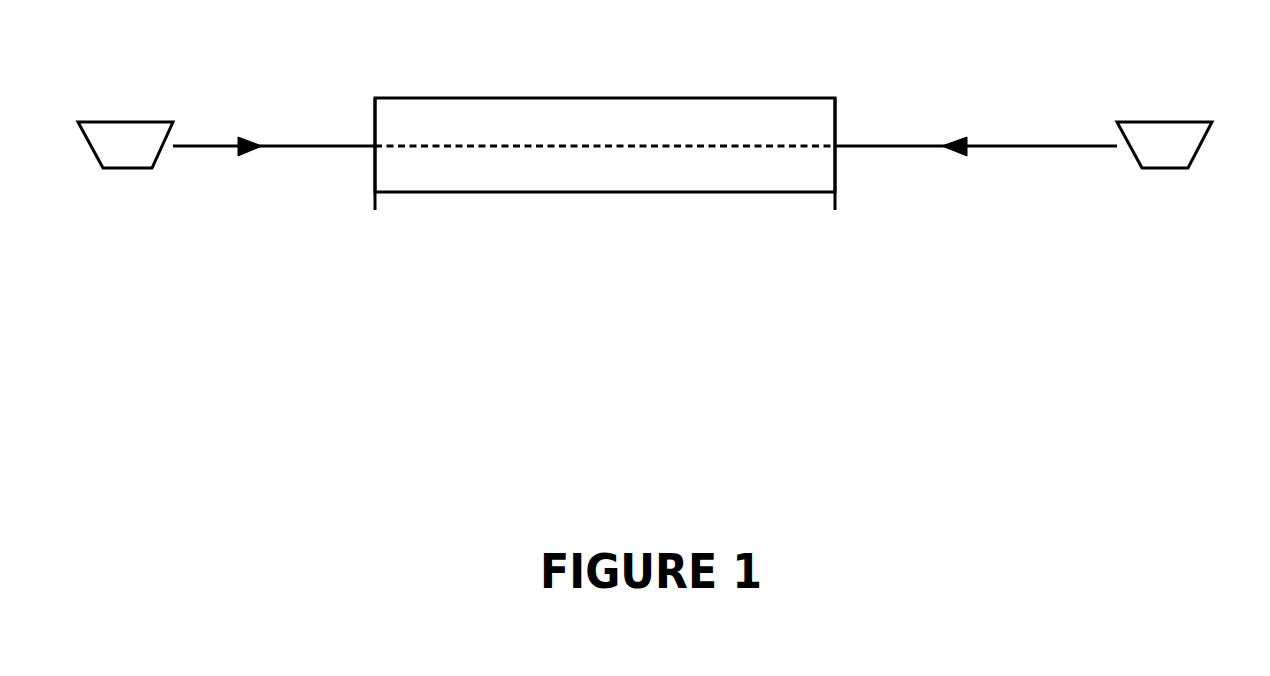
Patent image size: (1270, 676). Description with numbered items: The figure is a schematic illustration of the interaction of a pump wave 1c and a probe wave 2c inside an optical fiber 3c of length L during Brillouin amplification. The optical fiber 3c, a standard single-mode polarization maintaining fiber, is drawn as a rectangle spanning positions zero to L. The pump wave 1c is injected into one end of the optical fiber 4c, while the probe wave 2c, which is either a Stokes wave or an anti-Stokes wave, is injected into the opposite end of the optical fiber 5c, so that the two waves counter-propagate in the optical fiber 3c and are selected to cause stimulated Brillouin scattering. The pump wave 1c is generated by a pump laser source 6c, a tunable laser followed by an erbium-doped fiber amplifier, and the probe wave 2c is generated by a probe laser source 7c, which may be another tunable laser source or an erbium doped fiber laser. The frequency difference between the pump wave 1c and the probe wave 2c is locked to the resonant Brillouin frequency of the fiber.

The pump wave 1c is at (1058, 145).
The probe wave 2c is at (300, 145).
The optical fiber 3c is at (675, 98).
The one end of the optical fiber 4c is at (840, 115).
The opposite end of the optical fiber 5c is at (370, 98).
The pump laser source 6c is at (1152, 170).
The probe laser source 7c is at (110, 170).